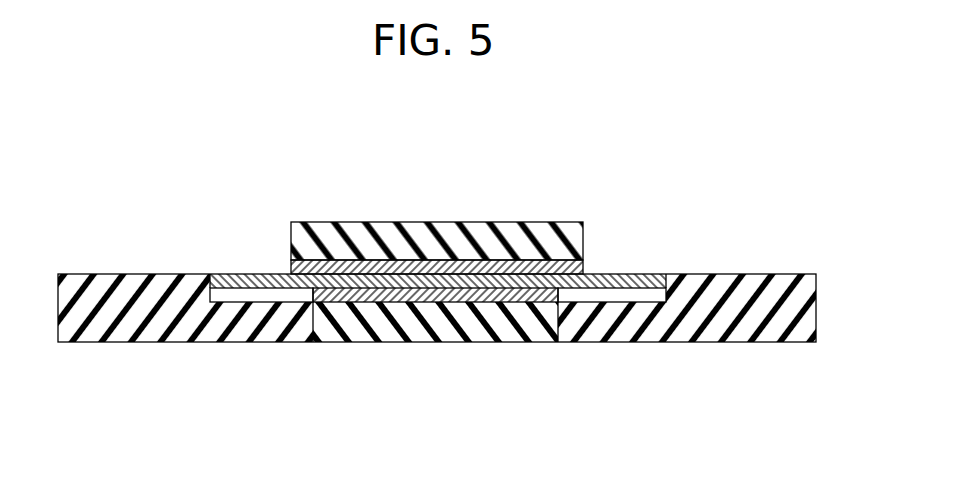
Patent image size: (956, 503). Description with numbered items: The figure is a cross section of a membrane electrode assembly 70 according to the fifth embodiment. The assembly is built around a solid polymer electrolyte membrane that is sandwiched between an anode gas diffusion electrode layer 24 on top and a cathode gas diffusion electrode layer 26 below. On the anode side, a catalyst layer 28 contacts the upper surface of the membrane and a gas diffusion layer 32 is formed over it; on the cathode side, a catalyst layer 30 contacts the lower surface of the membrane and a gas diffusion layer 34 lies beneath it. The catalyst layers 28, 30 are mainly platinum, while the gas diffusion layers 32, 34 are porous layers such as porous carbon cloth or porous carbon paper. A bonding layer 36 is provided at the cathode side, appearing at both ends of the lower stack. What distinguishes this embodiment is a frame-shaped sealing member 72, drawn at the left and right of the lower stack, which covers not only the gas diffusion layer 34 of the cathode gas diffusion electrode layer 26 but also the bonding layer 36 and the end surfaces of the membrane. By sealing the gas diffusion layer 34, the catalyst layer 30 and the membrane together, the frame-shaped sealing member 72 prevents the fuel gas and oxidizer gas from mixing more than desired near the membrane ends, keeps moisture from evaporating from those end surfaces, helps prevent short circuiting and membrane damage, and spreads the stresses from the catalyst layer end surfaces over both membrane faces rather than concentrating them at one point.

The membrane electrode assembly 70 is at (685, 178).
The anode gas diffusion electrode layer 24 is at (391, 211).
The gas diffusion layer 32 is at (423, 222).
The catalyst layer 28 is at (512, 263).
The cathode gas diffusion electrode layer 26 is at (343, 365).
The frame-shaped sealing member 72 is at (108, 332).
The gas diffusion layer 34 is at (480, 328).
The catalyst layer 30 is at (413, 297).
The bonding layer 36 is at (267, 297).